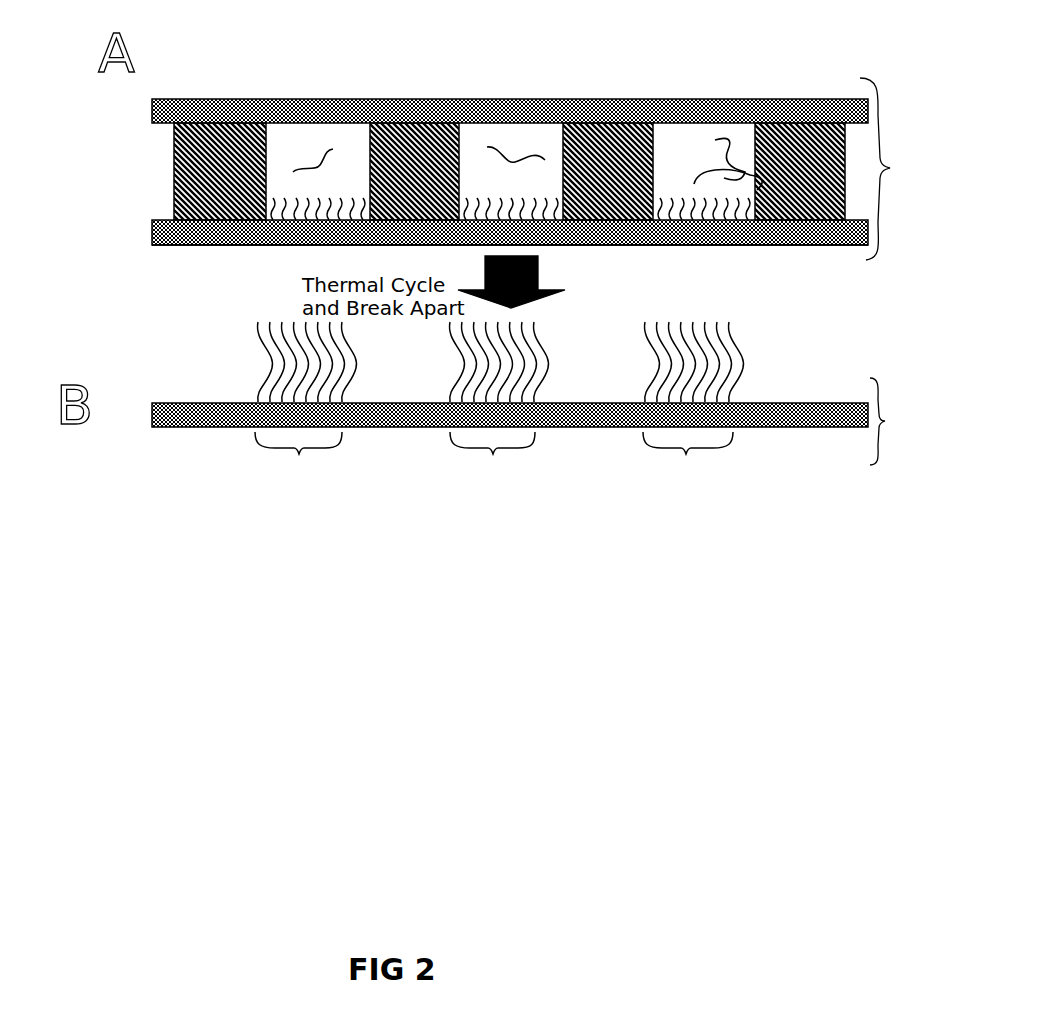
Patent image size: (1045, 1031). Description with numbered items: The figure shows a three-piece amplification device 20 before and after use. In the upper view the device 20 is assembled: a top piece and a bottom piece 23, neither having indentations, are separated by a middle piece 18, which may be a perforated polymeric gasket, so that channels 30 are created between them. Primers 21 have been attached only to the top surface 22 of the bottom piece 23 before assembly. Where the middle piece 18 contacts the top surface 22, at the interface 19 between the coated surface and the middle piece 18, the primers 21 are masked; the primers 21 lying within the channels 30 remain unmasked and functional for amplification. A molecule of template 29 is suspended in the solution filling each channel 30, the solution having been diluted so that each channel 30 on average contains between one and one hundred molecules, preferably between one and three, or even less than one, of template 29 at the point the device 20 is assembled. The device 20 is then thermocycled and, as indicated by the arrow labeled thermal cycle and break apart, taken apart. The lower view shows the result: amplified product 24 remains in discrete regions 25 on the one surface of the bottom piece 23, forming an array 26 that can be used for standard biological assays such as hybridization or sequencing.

The middle piece 18 is at (187, 196).
The interface 19 is at (141, 106).
The three-piece device 20 is at (900, 169).
The primers 21 is at (272, 217).
The top surface 22 is at (755, 230).
The bottom piece 23 is at (797, 251).
The amplified product 24 is at (250, 327).
The discrete regions 25 is at (632, 456).
The array 26 is at (536, 421).
The template 29 is at (725, 188).
The channel 30 is at (678, 146).